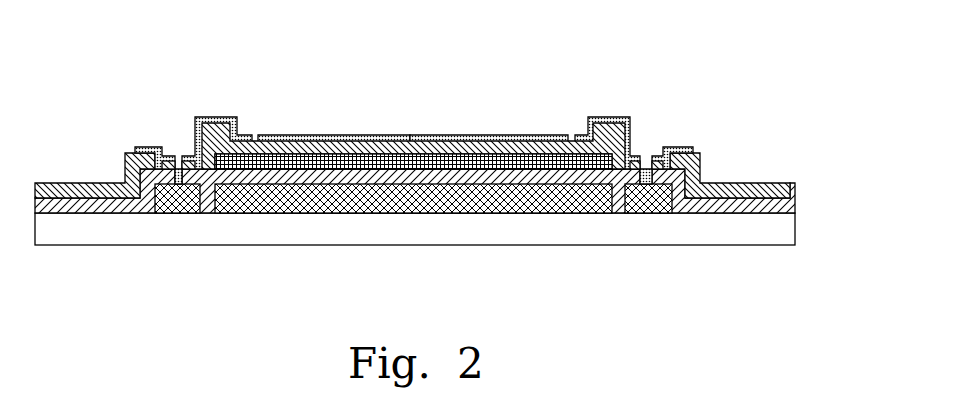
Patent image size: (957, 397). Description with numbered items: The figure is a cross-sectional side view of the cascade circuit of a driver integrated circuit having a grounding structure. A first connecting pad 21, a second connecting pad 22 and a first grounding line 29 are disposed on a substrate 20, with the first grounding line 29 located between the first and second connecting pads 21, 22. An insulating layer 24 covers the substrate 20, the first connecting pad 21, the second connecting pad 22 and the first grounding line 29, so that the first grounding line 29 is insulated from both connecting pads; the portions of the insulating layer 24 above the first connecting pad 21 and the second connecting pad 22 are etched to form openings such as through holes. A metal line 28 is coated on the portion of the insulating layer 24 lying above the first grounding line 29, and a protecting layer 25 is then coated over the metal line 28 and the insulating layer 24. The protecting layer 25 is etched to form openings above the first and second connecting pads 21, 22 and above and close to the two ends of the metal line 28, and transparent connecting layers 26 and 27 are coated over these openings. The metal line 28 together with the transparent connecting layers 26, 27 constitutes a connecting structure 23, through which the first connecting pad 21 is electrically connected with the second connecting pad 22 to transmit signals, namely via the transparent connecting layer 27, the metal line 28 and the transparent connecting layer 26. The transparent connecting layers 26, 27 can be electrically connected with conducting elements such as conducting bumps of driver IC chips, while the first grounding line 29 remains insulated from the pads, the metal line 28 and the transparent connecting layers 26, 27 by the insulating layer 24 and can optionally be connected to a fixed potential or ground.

The substrate 20 is at (477, 230).
The first connecting pad 21 is at (176, 212).
The second connecting pad 22 is at (650, 213).
The connecting structure 23 is at (562, 40).
The insulating layer 24 is at (260, 178).
The protecting layer 25 is at (750, 184).
The transparent connecting layer 26 is at (678, 146).
The transparent connecting layer 27 is at (212, 117).
The metal line 28 is at (327, 165).
The first grounding line 29 is at (343, 205).